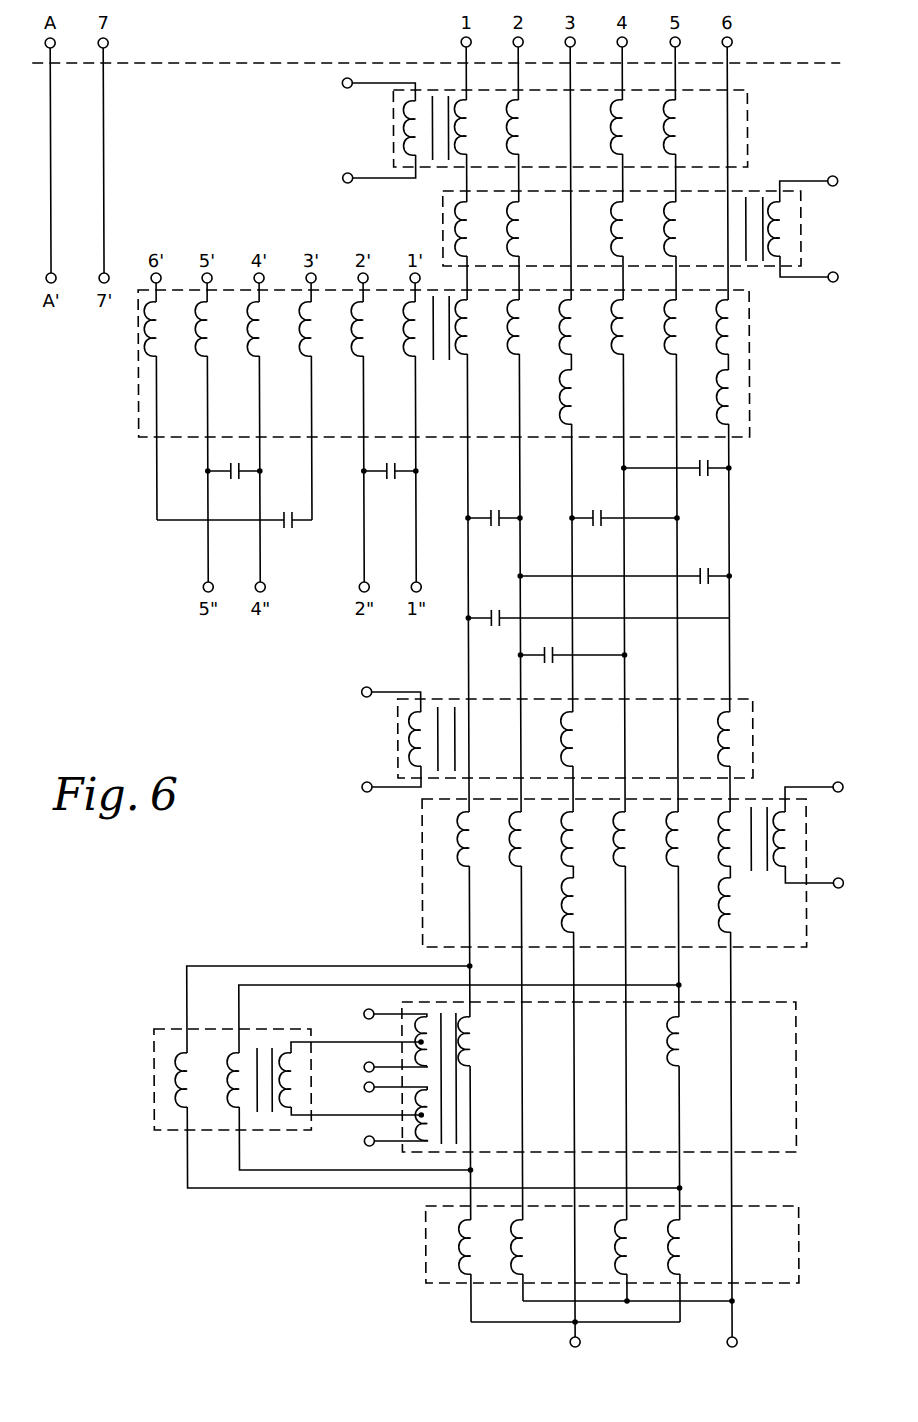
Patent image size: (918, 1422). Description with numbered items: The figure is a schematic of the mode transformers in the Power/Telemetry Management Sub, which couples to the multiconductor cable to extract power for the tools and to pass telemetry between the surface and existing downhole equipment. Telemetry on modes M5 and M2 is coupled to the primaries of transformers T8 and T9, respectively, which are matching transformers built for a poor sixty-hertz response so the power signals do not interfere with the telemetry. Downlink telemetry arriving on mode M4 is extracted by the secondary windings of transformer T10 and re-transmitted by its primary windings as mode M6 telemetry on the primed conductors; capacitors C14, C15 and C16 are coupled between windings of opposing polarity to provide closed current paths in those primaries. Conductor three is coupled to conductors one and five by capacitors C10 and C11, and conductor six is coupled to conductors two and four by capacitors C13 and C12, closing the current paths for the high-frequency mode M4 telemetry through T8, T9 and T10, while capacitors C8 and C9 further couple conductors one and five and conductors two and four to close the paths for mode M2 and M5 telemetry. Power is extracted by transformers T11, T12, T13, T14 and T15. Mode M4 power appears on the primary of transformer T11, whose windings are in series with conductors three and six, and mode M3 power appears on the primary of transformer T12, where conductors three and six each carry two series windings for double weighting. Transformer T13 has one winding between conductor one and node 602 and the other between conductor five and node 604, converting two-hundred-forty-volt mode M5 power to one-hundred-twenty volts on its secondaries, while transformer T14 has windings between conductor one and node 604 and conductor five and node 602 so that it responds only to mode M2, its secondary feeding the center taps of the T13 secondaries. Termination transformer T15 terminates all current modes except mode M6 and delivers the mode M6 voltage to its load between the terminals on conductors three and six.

The transformer T8 is at (747, 120).
The transformer T9 is at (442, 222).
The transformer T10 is at (748, 318).
The transformer T11 is at (750, 727).
The transformer T12 is at (419, 860).
The transformer T13 is at (792, 1065).
The transformer T14 is at (150, 1075).
The termination transformer T15 is at (794, 1243).
The mode M2 is at (809, 229).
The mode M3 is at (814, 835).
The mode M4 is at (574, 593).
The mode M5 is at (365, 130).
The mode M6 is at (657, 1344).
The capacitor C8 is at (598, 634).
The capacitor C9 is at (573, 671).
The capacitor C10 is at (494, 534).
The capacitor C11 is at (624, 534).
The capacitor C12 is at (676, 484).
The capacitor C13 is at (624, 592).
The capacitor C14 is at (390, 486).
The capacitor C15 is at (234, 486).
The capacitor C16 is at (234, 535).
The node 602 is at (466, 1170).
The node 604 is at (675, 1188).